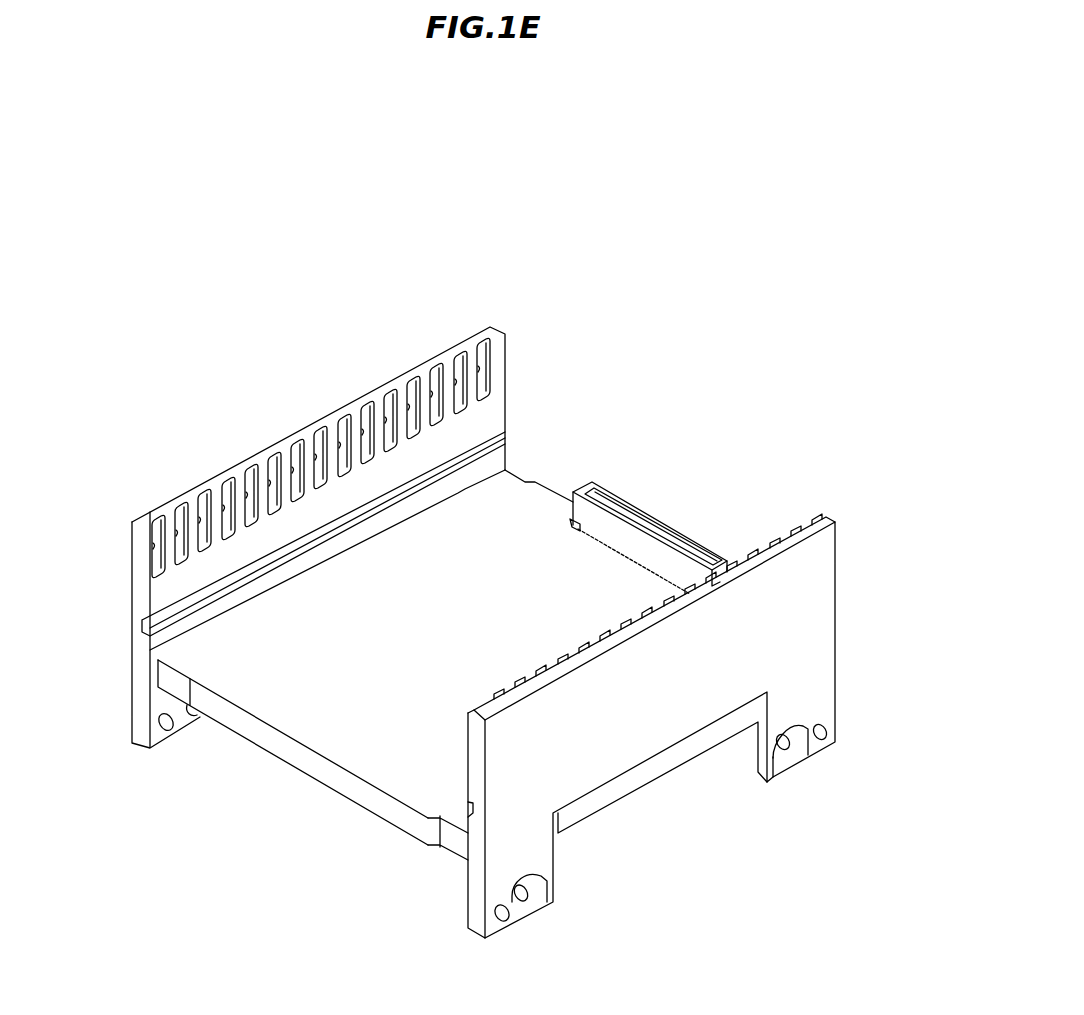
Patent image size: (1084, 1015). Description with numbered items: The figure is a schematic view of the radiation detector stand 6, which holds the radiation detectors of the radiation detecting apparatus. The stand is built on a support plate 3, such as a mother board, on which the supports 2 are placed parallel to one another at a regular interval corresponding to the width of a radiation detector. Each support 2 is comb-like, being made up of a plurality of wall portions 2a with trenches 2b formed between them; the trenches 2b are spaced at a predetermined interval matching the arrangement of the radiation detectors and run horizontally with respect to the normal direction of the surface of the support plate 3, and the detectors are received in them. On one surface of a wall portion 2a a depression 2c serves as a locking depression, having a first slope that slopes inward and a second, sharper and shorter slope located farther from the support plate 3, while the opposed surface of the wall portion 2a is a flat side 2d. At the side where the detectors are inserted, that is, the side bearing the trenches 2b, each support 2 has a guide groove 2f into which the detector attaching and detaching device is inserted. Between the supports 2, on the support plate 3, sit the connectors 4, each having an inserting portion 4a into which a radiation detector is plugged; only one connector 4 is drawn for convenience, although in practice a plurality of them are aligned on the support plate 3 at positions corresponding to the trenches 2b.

The radiation detector stand 6 is at (555, 304).
The support 2 is at (482, 635).
The wall portion 2a is at (455, 356).
The trench 2b is at (418, 364).
The depression 2c is at (376, 410).
The flat side 2d is at (338, 422).
The guide groove 2f is at (503, 428).
The support plate 3 is at (285, 754).
The connector 4 is at (648, 522).
The inserting portion 4a is at (631, 517).